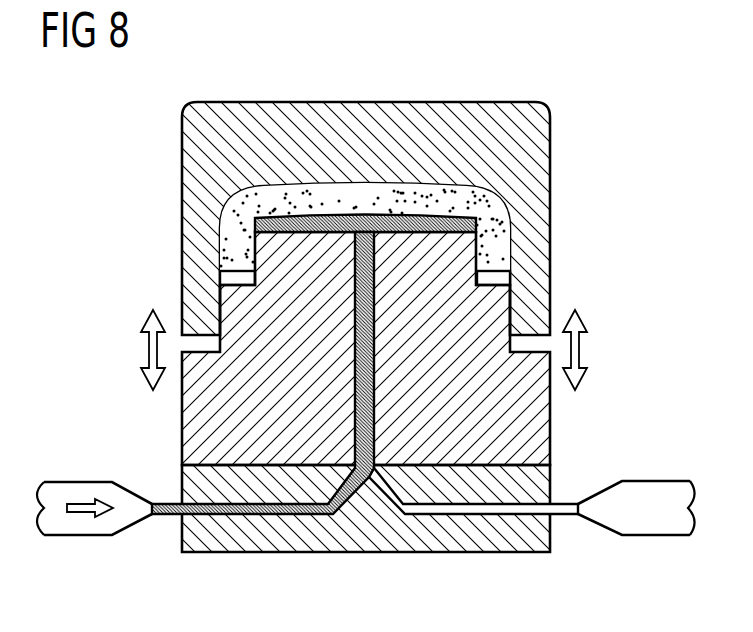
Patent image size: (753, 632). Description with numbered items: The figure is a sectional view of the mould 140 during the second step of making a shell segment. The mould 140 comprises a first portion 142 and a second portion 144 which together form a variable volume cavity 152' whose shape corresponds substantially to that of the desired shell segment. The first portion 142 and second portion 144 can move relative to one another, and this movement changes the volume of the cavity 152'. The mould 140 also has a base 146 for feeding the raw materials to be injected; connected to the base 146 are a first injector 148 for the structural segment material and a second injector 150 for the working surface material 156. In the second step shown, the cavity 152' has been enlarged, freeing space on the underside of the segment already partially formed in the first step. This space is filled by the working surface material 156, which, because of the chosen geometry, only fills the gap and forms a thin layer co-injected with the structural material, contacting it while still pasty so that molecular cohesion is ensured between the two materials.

The mould 140 is at (537, 70).
The first portion 142 is at (540, 180).
The second portion 144 is at (550, 418).
The base 146 is at (382, 553).
The first injector 148 is at (660, 493).
The second injector 150 is at (77, 492).
The variable volume cavity 152' is at (312, 278).
The working surface material 156 is at (362, 333).